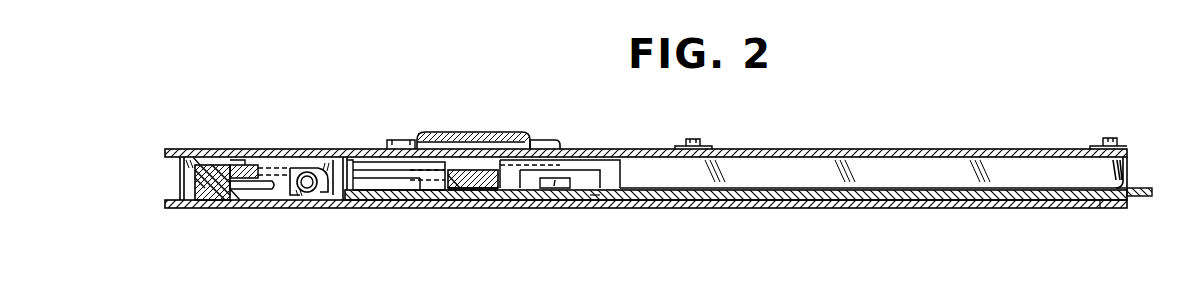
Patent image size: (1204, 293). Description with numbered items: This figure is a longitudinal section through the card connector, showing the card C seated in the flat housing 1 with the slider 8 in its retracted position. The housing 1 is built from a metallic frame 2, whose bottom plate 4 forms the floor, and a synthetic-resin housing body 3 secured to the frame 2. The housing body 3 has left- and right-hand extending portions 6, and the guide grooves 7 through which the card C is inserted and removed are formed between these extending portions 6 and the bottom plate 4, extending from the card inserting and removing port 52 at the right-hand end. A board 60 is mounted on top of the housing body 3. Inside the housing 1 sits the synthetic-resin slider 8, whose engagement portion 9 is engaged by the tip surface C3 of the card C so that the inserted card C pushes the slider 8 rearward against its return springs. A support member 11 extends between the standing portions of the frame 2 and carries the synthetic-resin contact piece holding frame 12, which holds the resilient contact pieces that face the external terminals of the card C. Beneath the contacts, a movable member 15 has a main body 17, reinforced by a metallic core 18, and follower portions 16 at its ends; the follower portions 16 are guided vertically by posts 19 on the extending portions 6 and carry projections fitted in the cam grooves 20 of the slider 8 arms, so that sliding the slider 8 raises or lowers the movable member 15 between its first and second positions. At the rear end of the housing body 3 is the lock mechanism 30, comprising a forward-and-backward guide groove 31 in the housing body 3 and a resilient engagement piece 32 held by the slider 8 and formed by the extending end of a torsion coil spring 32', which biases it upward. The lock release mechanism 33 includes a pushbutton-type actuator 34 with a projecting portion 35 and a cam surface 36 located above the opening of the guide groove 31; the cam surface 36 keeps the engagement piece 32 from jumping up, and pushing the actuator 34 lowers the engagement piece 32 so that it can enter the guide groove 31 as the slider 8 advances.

The housing 1 is at (722, 217).
The frame 2 is at (868, 210).
The housing body 3 is at (180, 170).
The bottom plate 4 is at (598, 210).
The extending portions 6 is at (985, 149).
The guide grooves 7 is at (1100, 210).
The slider 8 is at (322, 205).
The engagement portion 9 is at (333, 170).
The support member 11 is at (510, 130).
The contact piece holding frame 12 is at (548, 138).
The movable member 15 is at (470, 168).
The follower portions 16 is at (506, 205).
The main body 17 is at (490, 206).
The metallic core 18 is at (458, 200).
The posts 19 is at (418, 205).
The cam grooves 20 is at (410, 160).
The lock mechanism 30 is at (200, 210).
The guide groove 31 is at (250, 205).
The engagement piece 32 is at (227, 128).
The torsion coil spring 32' is at (305, 142).
The lock release mechanism 33 is at (196, 157).
The actuator 34 is at (198, 184).
The projecting portion 35 is at (254, 165).
The cam surface 36 is at (232, 203).
The card inserting and removing port 52 is at (1130, 180).
The board 60 is at (830, 149).
The card C is at (1152, 190).
The tip surface C3 is at (347, 205).